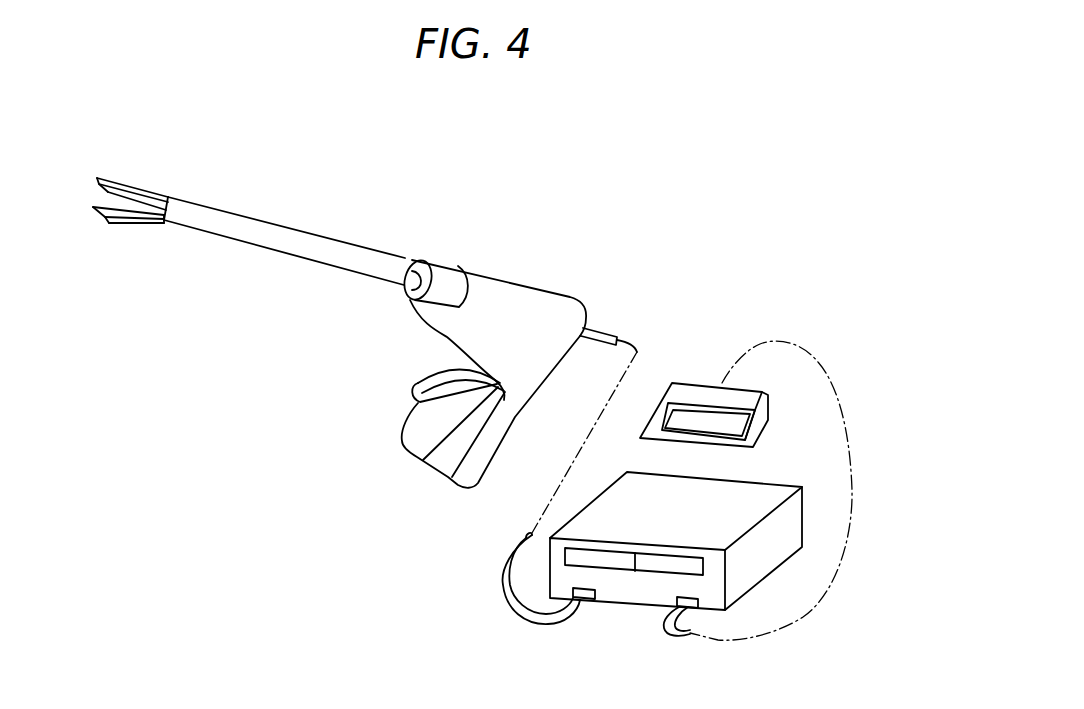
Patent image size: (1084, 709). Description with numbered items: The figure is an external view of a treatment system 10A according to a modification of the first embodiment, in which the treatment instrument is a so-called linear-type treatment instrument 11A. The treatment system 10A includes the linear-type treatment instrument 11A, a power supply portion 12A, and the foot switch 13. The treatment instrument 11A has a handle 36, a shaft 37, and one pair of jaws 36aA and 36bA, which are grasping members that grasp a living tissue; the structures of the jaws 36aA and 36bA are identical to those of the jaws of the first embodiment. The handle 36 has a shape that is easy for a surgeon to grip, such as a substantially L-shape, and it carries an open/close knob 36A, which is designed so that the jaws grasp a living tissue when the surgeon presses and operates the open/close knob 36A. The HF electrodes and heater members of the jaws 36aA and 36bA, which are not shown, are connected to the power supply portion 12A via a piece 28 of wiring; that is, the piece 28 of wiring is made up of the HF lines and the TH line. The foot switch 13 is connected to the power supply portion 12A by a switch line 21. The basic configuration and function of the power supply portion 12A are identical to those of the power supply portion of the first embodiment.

The treatment system 10A is at (822, 230).
The linear-type treatment instrument 11A is at (377, 229).
The power supply portion 12A is at (767, 480).
The foot switch 13 is at (697, 380).
The switch line 21 is at (848, 442).
The piece of wiring 28 is at (550, 502).
The handle 36 is at (533, 283).
The open/close knob 36A is at (417, 381).
The jaw 36aA is at (141, 184).
The jaw 36bA is at (117, 223).
The shaft 37 is at (307, 230).